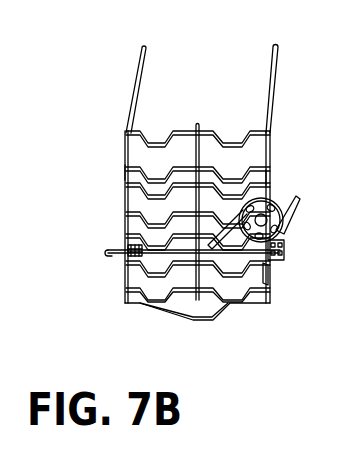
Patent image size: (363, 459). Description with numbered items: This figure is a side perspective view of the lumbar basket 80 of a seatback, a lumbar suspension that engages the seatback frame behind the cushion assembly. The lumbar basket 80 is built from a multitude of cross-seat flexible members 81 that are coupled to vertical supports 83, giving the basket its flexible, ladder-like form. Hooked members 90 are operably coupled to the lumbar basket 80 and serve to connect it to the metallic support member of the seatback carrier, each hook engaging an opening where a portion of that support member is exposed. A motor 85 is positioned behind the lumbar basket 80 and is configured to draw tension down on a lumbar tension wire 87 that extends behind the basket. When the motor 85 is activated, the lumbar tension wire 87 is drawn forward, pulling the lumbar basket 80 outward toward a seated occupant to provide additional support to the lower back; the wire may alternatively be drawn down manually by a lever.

The lumbar basket 80 is at (132, 85).
The vertical supports 83 is at (273, 102).
The cross-seat flexible members 81 is at (270, 140).
The hooked members 90 is at (127, 168).
The motor 85 is at (285, 220).
The lumbar tension wire 87 is at (167, 257).